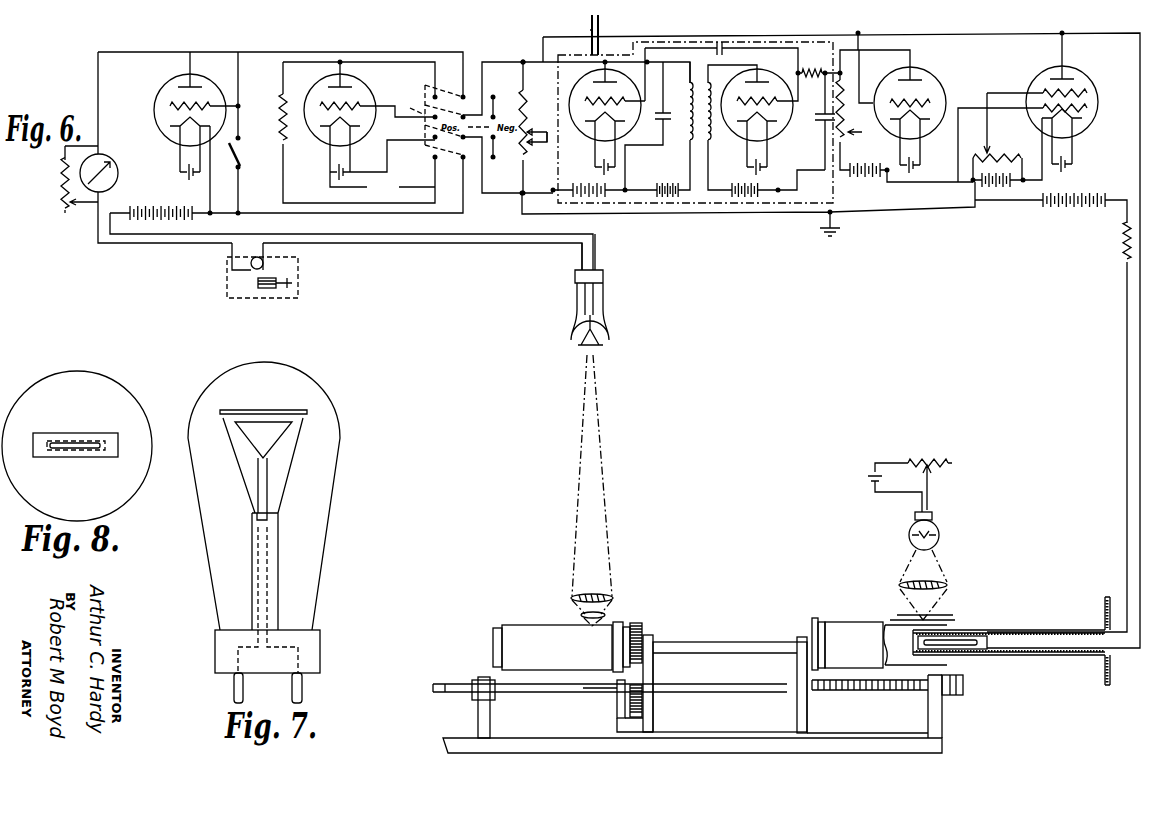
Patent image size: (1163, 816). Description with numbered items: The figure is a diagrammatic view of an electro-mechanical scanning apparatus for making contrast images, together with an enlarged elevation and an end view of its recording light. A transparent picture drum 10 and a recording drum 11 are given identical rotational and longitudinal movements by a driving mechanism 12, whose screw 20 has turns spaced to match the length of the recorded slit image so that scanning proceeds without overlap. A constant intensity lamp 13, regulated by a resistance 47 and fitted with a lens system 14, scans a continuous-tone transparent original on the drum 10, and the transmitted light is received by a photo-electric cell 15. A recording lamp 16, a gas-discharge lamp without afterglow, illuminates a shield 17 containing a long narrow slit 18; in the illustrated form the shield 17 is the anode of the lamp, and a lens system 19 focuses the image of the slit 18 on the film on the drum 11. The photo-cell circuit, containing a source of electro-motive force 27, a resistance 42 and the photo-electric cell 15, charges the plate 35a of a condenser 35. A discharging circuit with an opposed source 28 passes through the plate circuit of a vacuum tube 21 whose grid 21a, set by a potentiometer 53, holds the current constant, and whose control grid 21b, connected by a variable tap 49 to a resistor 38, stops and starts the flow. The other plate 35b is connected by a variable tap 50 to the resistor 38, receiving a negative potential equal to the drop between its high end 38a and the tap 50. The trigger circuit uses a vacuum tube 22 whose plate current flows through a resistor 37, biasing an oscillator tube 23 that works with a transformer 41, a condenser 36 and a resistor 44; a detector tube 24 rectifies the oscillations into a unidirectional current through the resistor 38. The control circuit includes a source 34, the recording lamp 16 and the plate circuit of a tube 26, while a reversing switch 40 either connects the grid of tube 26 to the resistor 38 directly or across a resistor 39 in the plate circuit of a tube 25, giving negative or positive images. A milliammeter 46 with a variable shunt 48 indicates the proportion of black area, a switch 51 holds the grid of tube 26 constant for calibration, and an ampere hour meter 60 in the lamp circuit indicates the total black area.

In FIG. 6, the transparent picture drum 10 is at (840, 622).
In FIG. 6, the recording drum 11 is at (518, 628).
In FIG. 6, the driving mechanism 12 is at (575, 693).
In FIG. 6, the constant intensity lamp 13 is at (940, 534).
In FIG. 6, the lens system 14 is at (946, 586).
In FIG. 6, the photo-electric cell 15 is at (958, 636).
In FIG. 6, the recording lamp 16 is at (572, 312).
In FIG. 7, the recording lamp 16 is at (292, 378).
In FIG. 8, the recording lamp 16 is at (112, 380).
In FIG. 6, the shield 17 is at (577, 347).
In FIG. 7, the shield 17 is at (265, 410).
In FIG. 8, the shield 17 is at (71, 434).
In FIG. 8, the slit 18 is at (96, 443).
In FIG. 6, the lens system 19 is at (614, 597).
In FIG. 6, the screw 20 is at (910, 690).
In FIG. 6, the vacuum tube 21 is at (1070, 72).
In FIG. 6, the grid 21a is at (1088, 90).
In FIG. 6, the control grid 21b is at (1088, 108).
In FIG. 6, the vacuum tube 22 is at (937, 80).
In FIG. 6, the tube 23 is at (742, 128).
In FIG. 6, the tube 24 is at (626, 118).
In FIG. 6, the tube 25 is at (315, 92).
In FIG. 6, the tube 26 is at (196, 70).
In FIG. 6, the source of electro-motive force 27 is at (1092, 206).
In FIG. 6, the source of electro-motive force 28 is at (996, 190).
In FIG. 6, the source of electro-motive force 34 is at (170, 210).
In FIG. 6, the condenser 35 is at (599, 30).
In FIG. 6, the plate of the condenser 35a is at (600, 38).
In FIG. 6, the plate of the condenser 35b is at (591, 30).
In FIG. 6, the condenser 36 is at (719, 45).
In FIG. 6, the resistor 37 is at (849, 130).
In FIG. 6, the resistor 38 is at (522, 62).
In FIG. 6, the high end of the resistor 38a is at (520, 196).
In FIG. 6, the resistor 39 is at (288, 146).
In FIG. 6, the reversing switch 40 is at (424, 96).
In FIG. 6, the transformer 41 is at (688, 134).
In FIG. 6, the resistance 42 is at (1122, 248).
In FIG. 6, the resistor 44 is at (810, 70).
In FIG. 6, the milliammeter 46 is at (109, 165).
In FIG. 6, the resistance 47 is at (926, 460).
In FIG. 6, the variable shunt 48 is at (60, 187).
In FIG. 6, the variable tap 49 is at (524, 88).
In FIG. 6, the variable tap 50 is at (545, 145).
In FIG. 6, the switch 51 is at (240, 148).
In FIG. 6, the potentiometer 53 is at (1000, 150).
In FIG. 6, the ampere hour meter 60 is at (298, 276).